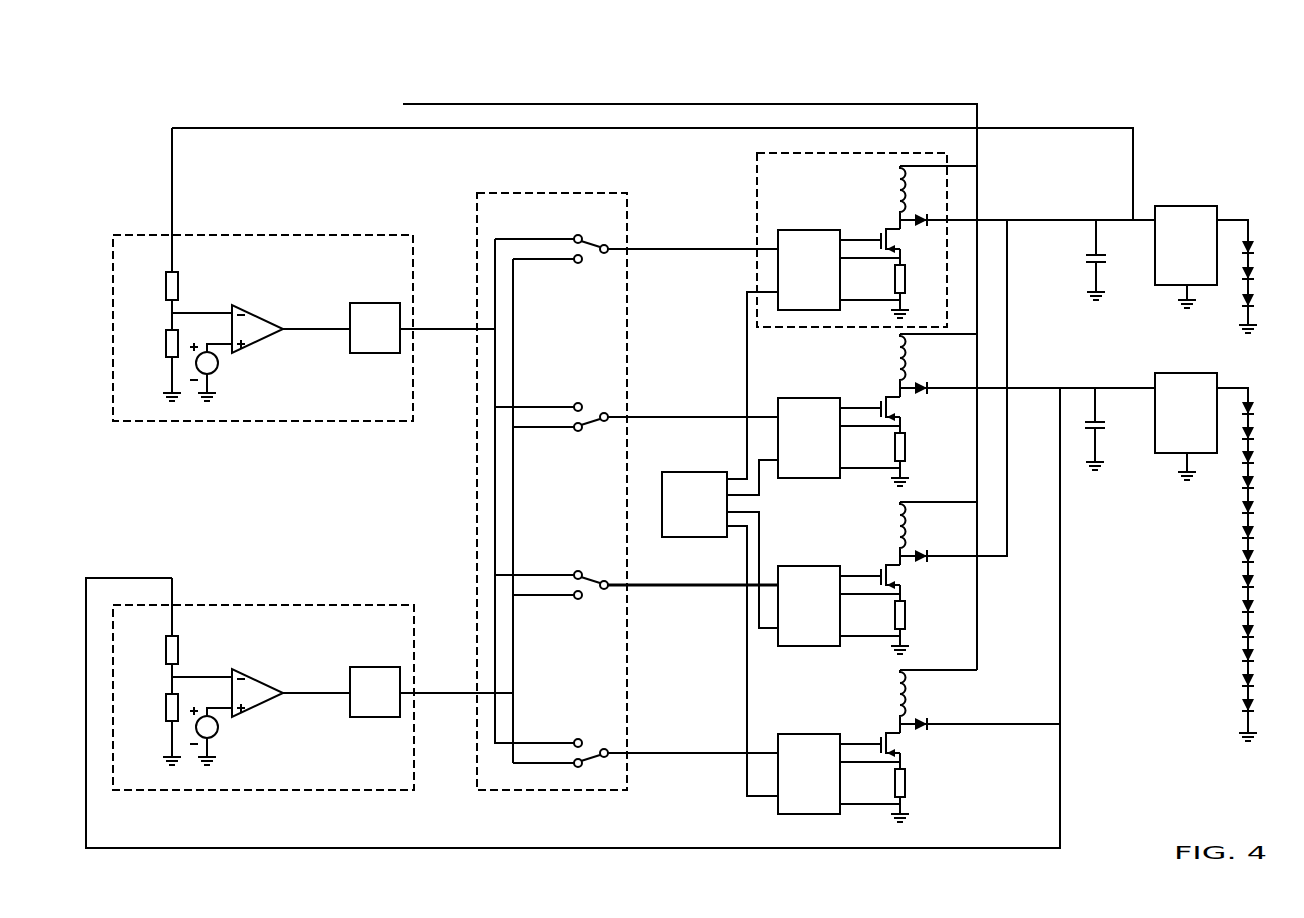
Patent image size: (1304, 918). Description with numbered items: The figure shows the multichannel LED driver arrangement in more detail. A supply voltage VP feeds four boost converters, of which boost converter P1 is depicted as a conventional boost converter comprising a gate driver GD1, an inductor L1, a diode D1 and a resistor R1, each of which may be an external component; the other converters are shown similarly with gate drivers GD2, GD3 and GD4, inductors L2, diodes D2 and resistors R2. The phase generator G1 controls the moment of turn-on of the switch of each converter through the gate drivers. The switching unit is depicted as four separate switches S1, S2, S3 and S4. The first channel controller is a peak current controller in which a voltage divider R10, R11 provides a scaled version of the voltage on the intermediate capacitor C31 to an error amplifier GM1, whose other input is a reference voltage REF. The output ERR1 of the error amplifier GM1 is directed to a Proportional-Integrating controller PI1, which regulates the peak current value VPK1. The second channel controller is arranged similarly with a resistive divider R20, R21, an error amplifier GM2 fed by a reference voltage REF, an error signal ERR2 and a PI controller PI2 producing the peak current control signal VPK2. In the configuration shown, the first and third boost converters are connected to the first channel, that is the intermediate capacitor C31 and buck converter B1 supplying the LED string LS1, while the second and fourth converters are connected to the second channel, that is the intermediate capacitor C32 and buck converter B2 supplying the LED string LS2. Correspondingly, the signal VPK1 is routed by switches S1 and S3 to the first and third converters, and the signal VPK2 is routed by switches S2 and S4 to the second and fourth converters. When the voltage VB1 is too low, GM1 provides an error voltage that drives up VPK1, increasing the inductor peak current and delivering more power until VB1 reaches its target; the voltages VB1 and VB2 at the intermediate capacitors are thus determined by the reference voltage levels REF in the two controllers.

The supply voltage VP is at (677, 382).
The voltage divider resistor R10 is at (153, 286).
The voltage divider resistor R11 is at (153, 343).
The error amplifier GM1 is at (257, 319).
The reference voltage REF is at (220, 554).
The error signal ERR1 is at (316, 318).
The PI controller PI1 is at (375, 317).
The peak current control signal VPK1 is at (447, 318).
The resistive divider resistor R20 is at (153, 650).
The resistive divider resistor R21 is at (153, 707).
The error amplifier GM2 is at (257, 683).
The error signal ERR2 is at (316, 682).
The PI controller PI2 is at (375, 681).
The peak current control signal VPK2 is at (456, 682).
The switch S1 is at (636, 240).
The switch S2 is at (636, 408).
The switch S3 is at (636, 576).
The switch S4 is at (636, 744).
The phase generator G1 is at (720, 544).
The boost converter P1 is at (795, 185).
The gate driver GD1 is at (809, 256).
The gate driver GD2 is at (809, 424).
The gate driver GD3 is at (809, 592).
The gate driver GD4 is at (809, 760).
The inductor L1 is at (938, 193).
The inductor L2 is at (938, 529).
The diode D1 is at (1027, 231).
The diode D2 is at (1027, 486).
The resistor R1 is at (914, 279).
The resistor R2 is at (914, 615).
The intermediate capacitor voltage VB1 is at (1087, 208).
The intermediate capacitor voltage VB2 is at (1087, 376).
The intermediate capacitor C31 is at (1115, 260).
The intermediate capacitor C32 is at (1114, 429).
The buck converter B1 is at (1186, 245).
The buck converter B2 is at (1186, 415).
The LED string LS1 is at (1253, 276).
The LED string LS2 is at (1253, 564).